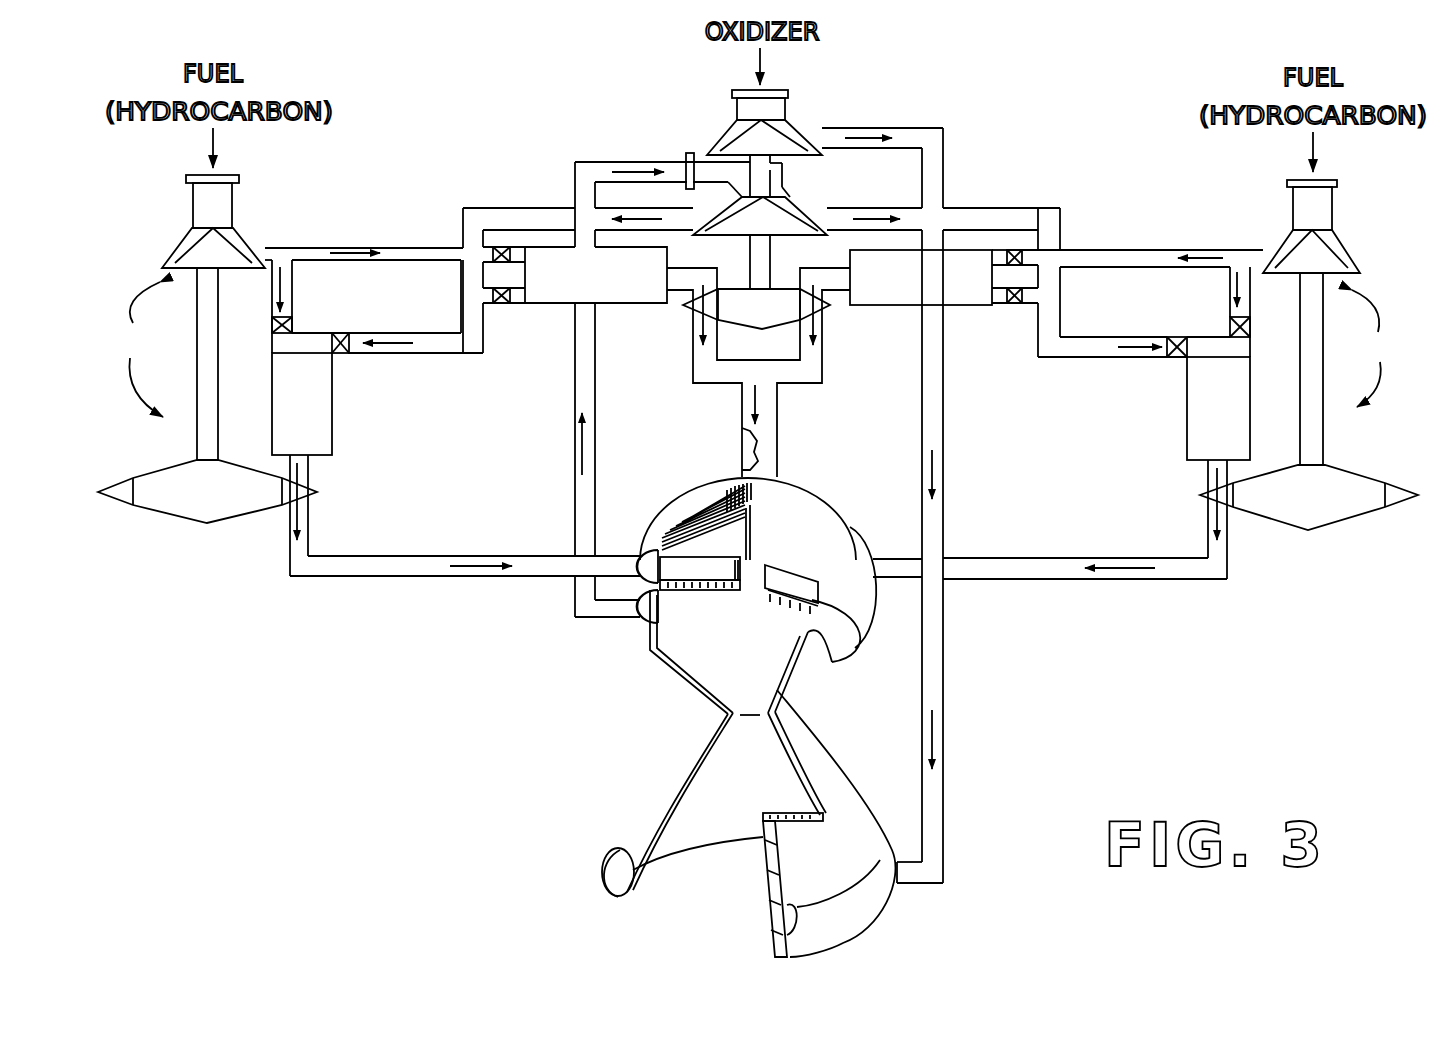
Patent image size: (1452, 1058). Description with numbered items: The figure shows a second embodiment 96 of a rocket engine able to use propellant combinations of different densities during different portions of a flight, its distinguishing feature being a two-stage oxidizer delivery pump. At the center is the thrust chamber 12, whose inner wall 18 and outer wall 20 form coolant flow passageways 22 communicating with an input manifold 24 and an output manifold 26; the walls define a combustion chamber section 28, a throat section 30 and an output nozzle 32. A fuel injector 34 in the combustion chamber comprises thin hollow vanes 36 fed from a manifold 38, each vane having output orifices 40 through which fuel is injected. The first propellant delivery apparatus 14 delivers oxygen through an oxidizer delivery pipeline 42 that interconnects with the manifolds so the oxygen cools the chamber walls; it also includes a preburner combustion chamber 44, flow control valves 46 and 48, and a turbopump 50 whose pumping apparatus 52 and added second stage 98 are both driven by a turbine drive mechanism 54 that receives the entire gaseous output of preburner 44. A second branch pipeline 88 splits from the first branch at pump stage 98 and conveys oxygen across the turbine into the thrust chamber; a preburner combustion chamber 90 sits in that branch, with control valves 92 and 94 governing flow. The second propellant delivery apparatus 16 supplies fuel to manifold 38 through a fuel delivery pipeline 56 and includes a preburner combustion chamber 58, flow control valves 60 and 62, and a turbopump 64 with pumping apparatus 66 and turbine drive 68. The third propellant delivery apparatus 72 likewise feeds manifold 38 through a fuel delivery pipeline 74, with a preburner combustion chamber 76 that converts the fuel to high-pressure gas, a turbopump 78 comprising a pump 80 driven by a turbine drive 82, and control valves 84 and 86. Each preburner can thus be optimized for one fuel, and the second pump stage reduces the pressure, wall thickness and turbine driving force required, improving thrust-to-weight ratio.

The thrust chamber 12 is at (887, 702).
The first propellant delivery apparatus 14 is at (933, 57).
The second propellant delivery apparatus 16 is at (340, 160).
The inner wall 18 is at (653, 822).
The outer wall 20 is at (658, 798).
The coolant flow passageways 22 is at (803, 810).
The input manifold 24 is at (888, 908).
The output manifold 26 is at (643, 623).
The combustion chamber section 28 is at (763, 620).
The throat section 30 is at (750, 730).
The output nozzle 32 is at (698, 831).
The fuel injector 34 is at (670, 517).
The thin hollow vanes 36 is at (708, 504).
The manifold 38 is at (650, 550).
The output orifices 40 is at (732, 585).
The oxidizer delivery pipeline 42 is at (530, 205).
The preburner combustion chamber 44 is at (567, 303).
The flow control valve 46 is at (503, 250).
The flow control valve 48 is at (498, 305).
The turbopump 50 is at (678, 127).
The pumping apparatus 52 is at (785, 117).
The turbine drive mechanism 54 is at (777, 287).
The fuel delivery pipeline 56 is at (292, 295).
The preburner combustion chamber 58 is at (332, 408).
The flow control valve 60 is at (288, 325).
The flow control valve 62 is at (340, 353).
The turbopump 64 is at (139, 349).
The pumping apparatus 66 is at (177, 247).
The turbine drive 68 is at (148, 460).
The third propellant delivery apparatus 72 is at (1137, 178).
The fuel delivery pipeline 74 is at (1230, 303).
The preburner combustion chamber 76 is at (1187, 407).
The turbopump 78 is at (1371, 348).
The pump 80 is at (1340, 250).
The turbine drive 82 is at (1365, 475).
The control valve 84 is at (1177, 337).
The control valve 86 is at (1247, 327).
The second branch pipeline 88 is at (987, 210).
The preburner combustion chamber 90 is at (888, 307).
The control valve 92 is at (1020, 250).
The control valve 94 is at (1015, 305).
The second embodiment of a rocket engine 96 is at (1195, 699).
The second stage 98 is at (797, 198).